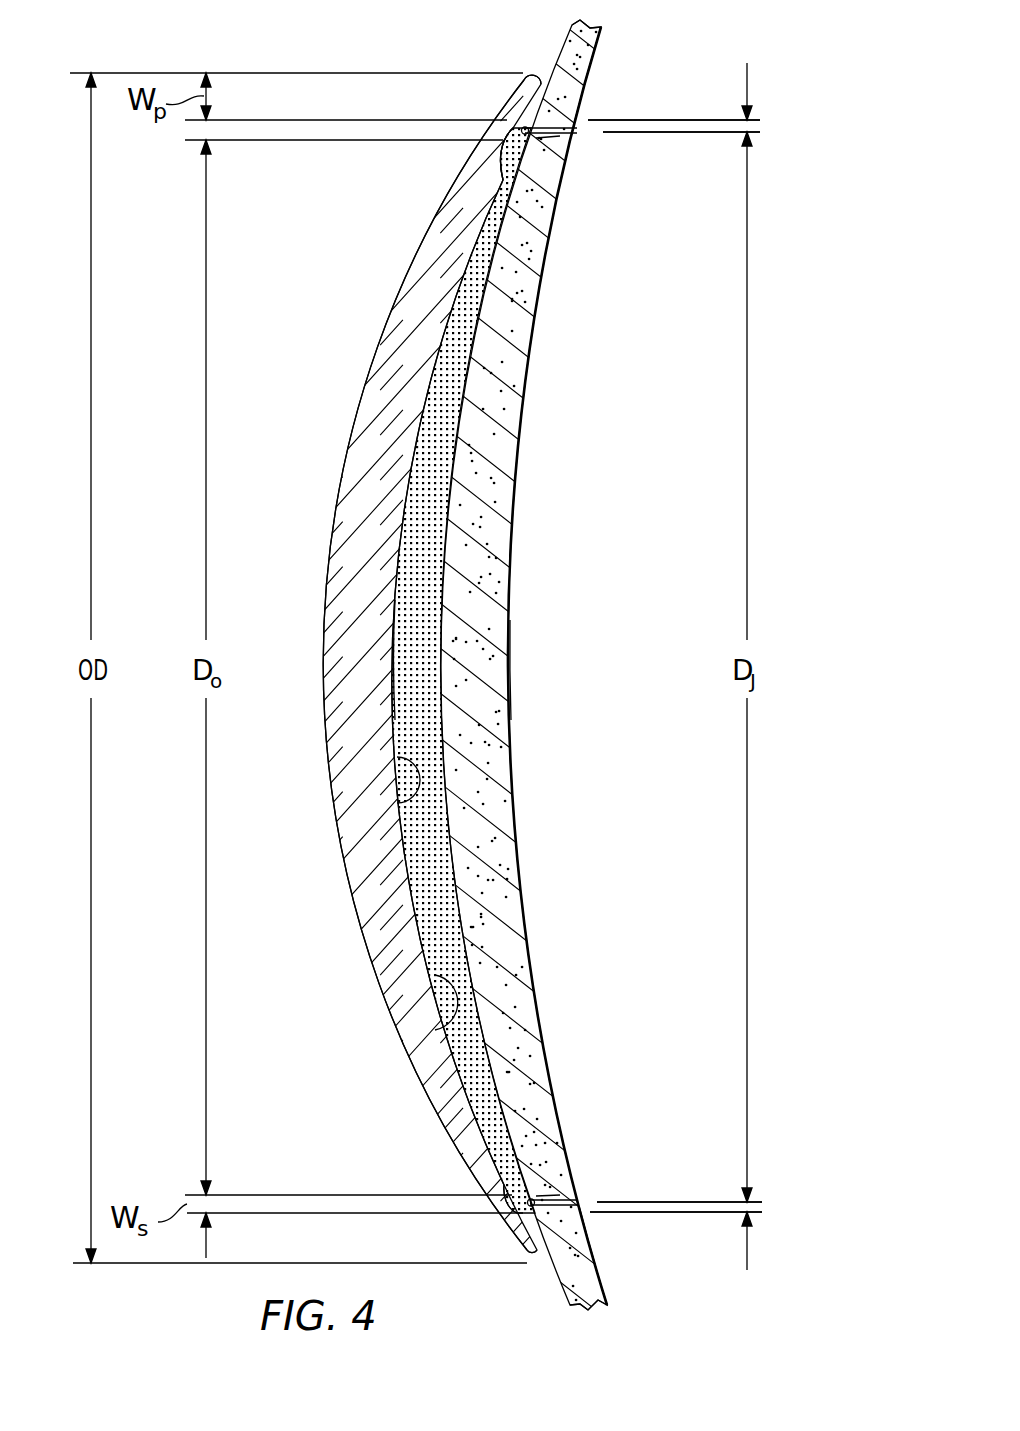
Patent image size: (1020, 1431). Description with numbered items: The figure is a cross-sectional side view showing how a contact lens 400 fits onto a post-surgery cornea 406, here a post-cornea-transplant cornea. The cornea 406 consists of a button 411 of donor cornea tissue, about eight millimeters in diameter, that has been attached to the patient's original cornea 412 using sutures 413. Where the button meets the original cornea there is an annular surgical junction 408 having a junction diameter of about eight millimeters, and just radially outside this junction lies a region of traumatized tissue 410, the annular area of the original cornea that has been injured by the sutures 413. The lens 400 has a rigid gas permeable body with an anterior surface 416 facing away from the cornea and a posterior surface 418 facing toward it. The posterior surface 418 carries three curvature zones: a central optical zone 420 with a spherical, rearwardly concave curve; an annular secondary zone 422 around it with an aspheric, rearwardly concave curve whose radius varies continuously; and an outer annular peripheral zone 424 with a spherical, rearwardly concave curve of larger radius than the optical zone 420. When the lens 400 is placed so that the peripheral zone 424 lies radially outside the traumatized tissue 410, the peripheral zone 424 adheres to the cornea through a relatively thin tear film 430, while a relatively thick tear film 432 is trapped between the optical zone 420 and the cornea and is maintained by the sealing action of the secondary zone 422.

The contact lens 400 is at (395, 307).
The post-surgery cornea 406 is at (511, 567).
The annular surgical junction 408 is at (580, 134).
The region of traumatized tissue 410 is at (762, 125).
The button of donor cornea tissue 411 is at (512, 660).
The original cornea 412 is at (603, 50).
The sutures 413 is at (547, 163).
The anterior surface 416 is at (362, 392).
The posterior surface 418 is at (435, 1030).
The optical zone 420 is at (397, 803).
The annular secondary zone 422 is at (503, 153).
The annular peripheral zone 424 is at (520, 1260).
The relatively thin tear film 430 is at (405, 625).
The relatively thick tear film 432 is at (535, 70).